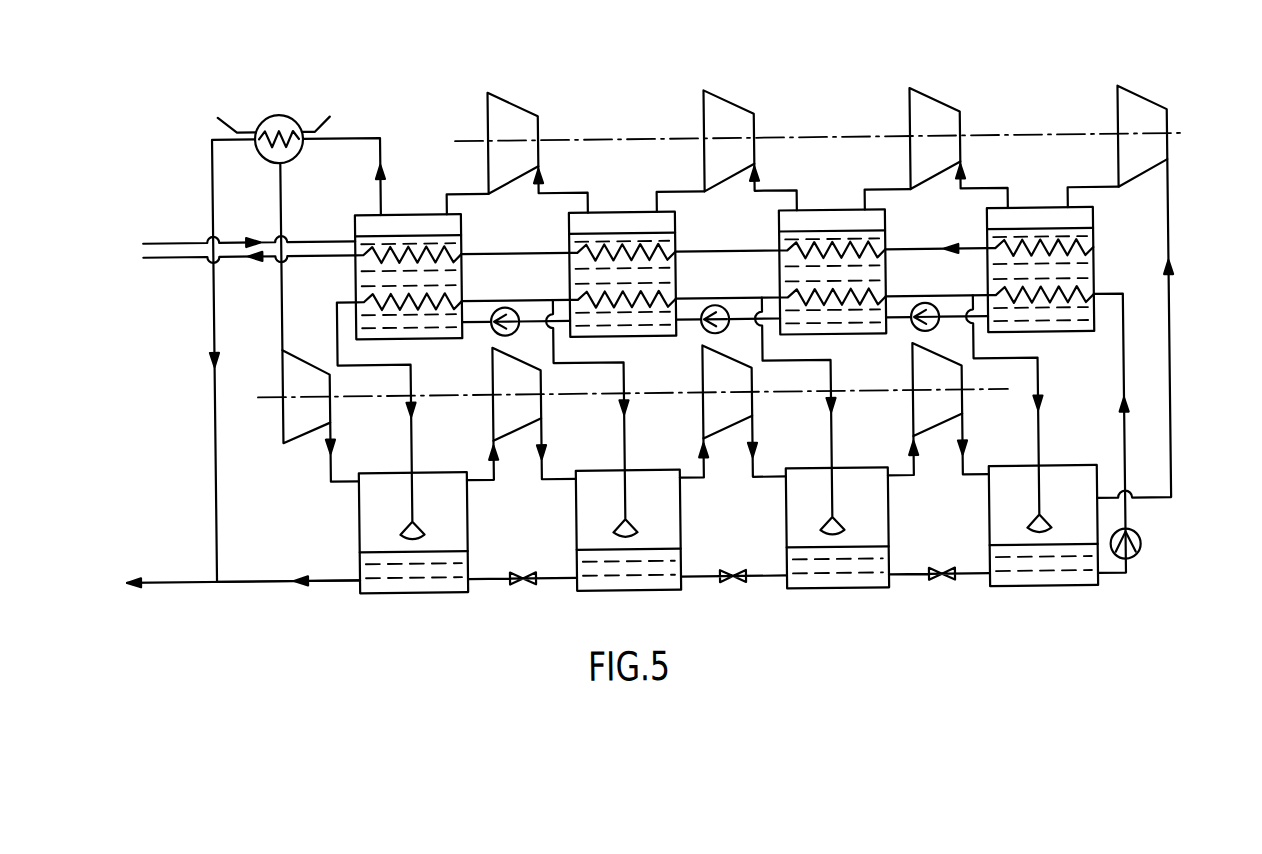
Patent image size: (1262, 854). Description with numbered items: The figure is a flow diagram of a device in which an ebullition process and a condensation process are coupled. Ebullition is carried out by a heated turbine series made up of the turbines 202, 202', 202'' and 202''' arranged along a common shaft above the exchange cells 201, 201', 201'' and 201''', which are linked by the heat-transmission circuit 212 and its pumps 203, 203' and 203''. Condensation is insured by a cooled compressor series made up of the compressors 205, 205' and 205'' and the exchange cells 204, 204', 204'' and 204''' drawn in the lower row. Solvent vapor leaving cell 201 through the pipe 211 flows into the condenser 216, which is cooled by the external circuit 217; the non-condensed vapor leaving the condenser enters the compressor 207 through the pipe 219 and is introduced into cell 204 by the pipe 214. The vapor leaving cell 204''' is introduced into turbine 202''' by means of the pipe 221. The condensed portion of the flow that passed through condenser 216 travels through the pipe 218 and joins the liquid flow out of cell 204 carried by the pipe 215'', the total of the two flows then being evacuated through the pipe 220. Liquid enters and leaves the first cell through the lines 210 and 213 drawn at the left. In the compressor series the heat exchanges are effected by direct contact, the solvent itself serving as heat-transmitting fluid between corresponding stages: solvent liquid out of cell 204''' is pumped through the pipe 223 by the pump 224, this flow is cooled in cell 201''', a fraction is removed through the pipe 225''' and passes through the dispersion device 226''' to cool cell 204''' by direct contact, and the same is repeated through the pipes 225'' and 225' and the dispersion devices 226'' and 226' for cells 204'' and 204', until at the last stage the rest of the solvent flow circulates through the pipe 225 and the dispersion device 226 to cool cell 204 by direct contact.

The exchange cell 201 is at (440, 266).
The exchange cell 201' is at (657, 264).
The exchange cell 201'' is at (862, 262).
The exchange cell 201''' is at (1068, 259).
The turbine 202 is at (537, 141).
The turbine 202' is at (750, 139).
The turbine 202'' is at (958, 135).
The turbine 202''' is at (1115, 122).
The pump 203 is at (501, 338).
The pump 203' is at (716, 337).
The pump 203'' is at (919, 335).
The exchange cell 204 is at (414, 553).
The exchange cell 204' is at (574, 551).
The exchange cell 204'' is at (785, 548).
The exchange cell 204''' is at (993, 546).
The compressor 205 is at (509, 413).
The compressor 205' is at (714, 411).
The compressor 205'' is at (921, 409).
The compressor 207 is at (283, 411).
The inlet line 210 is at (238, 234).
The pipe 211 is at (371, 131).
The heat-transmission circuit 212 is at (971, 256).
The outlet line 213 is at (239, 256).
The pipe 214 is at (330, 467).
The pipe 215'' is at (288, 561).
The condenser 216 is at (299, 113).
The external circuit 217 is at (232, 113).
The pipe 218 is at (216, 318).
The pipe 219 is at (283, 193).
The pipe 220 is at (187, 574).
The pipe 221 is at (1172, 477).
The pipe 223 is at (1107, 579).
The pump 224 is at (1139, 553).
The pipe 225 is at (401, 387).
The pipe 225' is at (616, 385).
The pipe 225'' is at (827, 382).
The pipe 225''' is at (1039, 380).
The dispersion device 226 is at (429, 505).
The dispersion device 226' is at (646, 503).
The dispersion device 226'' is at (855, 500).
The dispersion device 226''' is at (1063, 498).